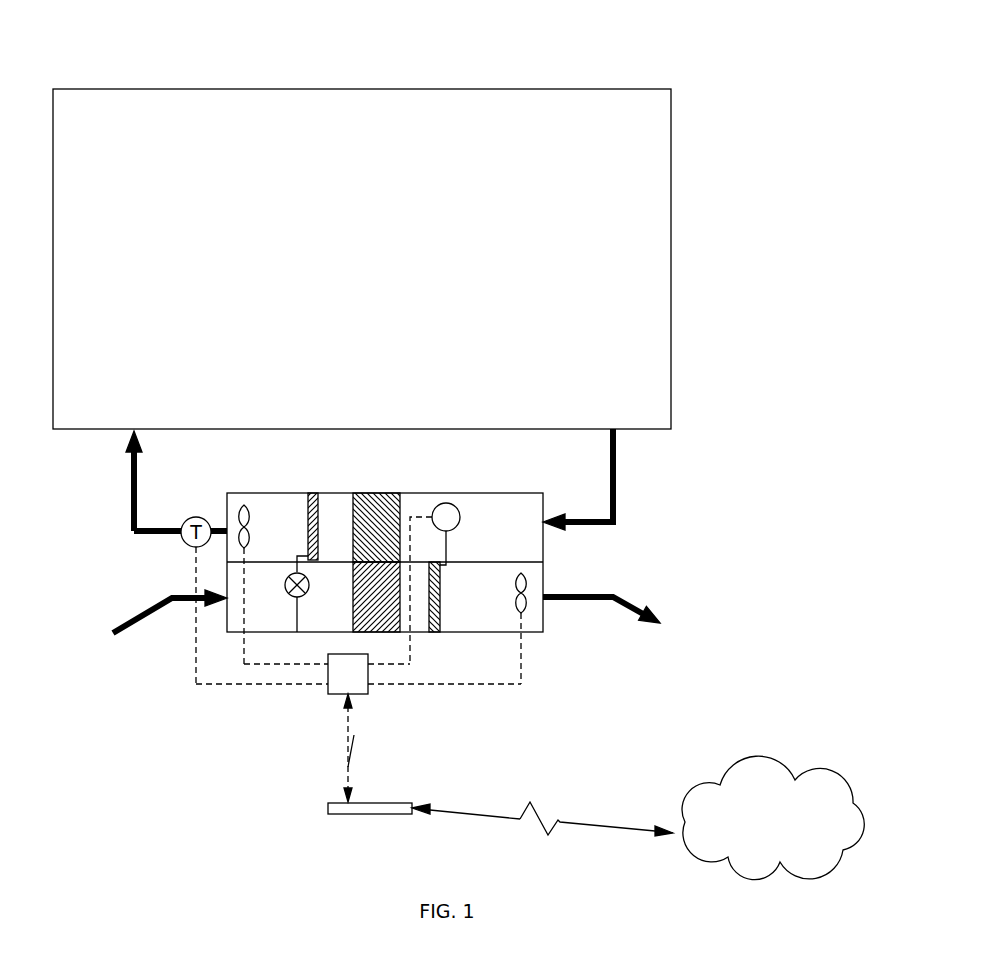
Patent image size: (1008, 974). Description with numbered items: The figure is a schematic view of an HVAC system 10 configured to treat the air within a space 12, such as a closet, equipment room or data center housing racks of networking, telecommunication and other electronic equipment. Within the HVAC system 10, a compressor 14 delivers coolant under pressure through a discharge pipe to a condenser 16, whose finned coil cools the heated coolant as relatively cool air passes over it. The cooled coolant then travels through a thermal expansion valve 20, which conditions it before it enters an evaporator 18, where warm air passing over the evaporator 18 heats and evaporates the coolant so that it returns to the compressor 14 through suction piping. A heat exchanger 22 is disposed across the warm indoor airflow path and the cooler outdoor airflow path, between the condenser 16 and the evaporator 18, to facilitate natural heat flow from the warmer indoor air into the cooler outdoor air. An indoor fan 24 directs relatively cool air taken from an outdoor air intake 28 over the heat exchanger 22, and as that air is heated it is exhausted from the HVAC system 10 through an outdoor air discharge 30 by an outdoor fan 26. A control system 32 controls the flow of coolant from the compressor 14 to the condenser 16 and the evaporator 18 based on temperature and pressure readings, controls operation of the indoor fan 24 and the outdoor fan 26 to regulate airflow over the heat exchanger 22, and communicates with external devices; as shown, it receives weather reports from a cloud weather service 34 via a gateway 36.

The HVAC system 10 is at (553, 640).
The space 12 is at (604, 110).
The compressor 14 is at (460, 513).
The condenser 16 is at (438, 633).
The evaporator 18 is at (313, 493).
The thermal expansion valve 20 is at (289, 592).
The heat exchanger 22 is at (353, 583).
The indoor fan 24 is at (240, 515).
The outdoor fan 26 is at (528, 580).
The outdoor air intake 28 is at (136, 628).
The outdoor air discharge 30 is at (620, 600).
The control system 32 is at (328, 688).
The cloud weather service 34 is at (764, 848).
The gateway 36 is at (372, 815).